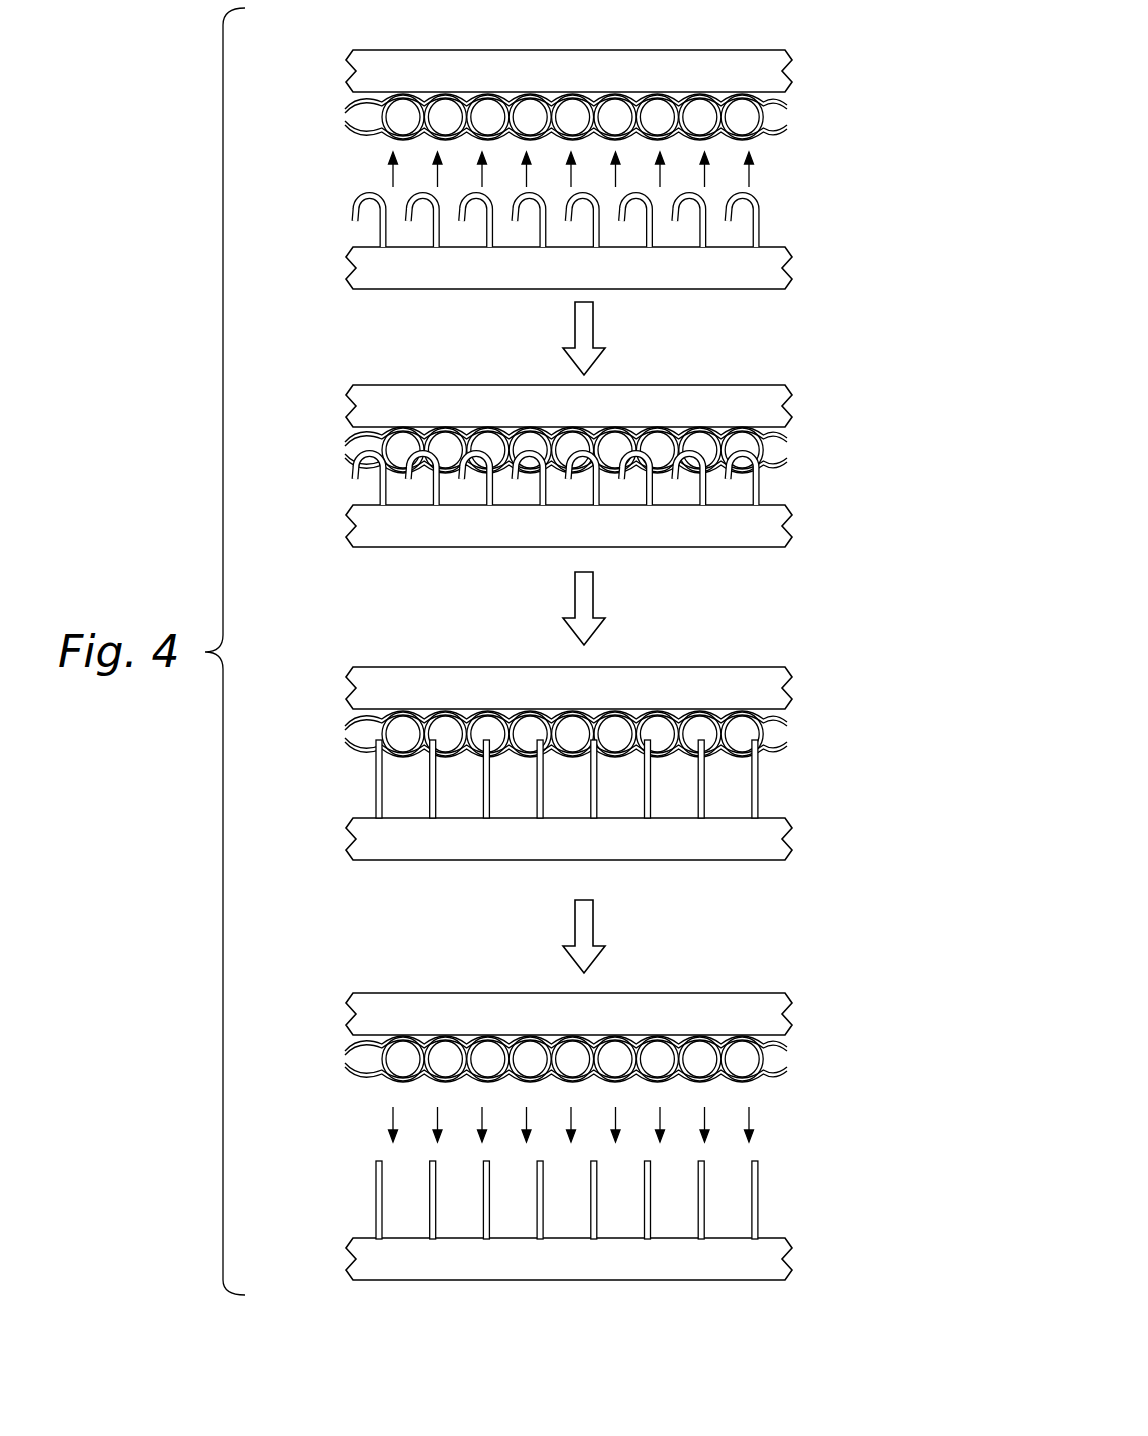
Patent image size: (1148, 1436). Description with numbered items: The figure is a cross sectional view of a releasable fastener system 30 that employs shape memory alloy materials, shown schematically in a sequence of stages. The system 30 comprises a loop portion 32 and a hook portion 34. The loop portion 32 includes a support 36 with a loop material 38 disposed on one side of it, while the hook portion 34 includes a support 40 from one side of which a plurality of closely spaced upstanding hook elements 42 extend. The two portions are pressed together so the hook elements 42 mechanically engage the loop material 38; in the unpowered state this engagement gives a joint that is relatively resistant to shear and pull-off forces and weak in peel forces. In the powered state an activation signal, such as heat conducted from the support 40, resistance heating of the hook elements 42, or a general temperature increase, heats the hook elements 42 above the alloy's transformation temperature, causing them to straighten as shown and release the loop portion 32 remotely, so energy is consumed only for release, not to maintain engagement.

The releasable fastener system 30 is at (584, 640).
The loop portion 32 is at (568, 545).
The hook portion 34 is at (569, 731).
The support 36 is at (645, 62).
The loop material 38 is at (765, 108).
The support 40 is at (762, 274).
The hook elements 42 is at (770, 218).